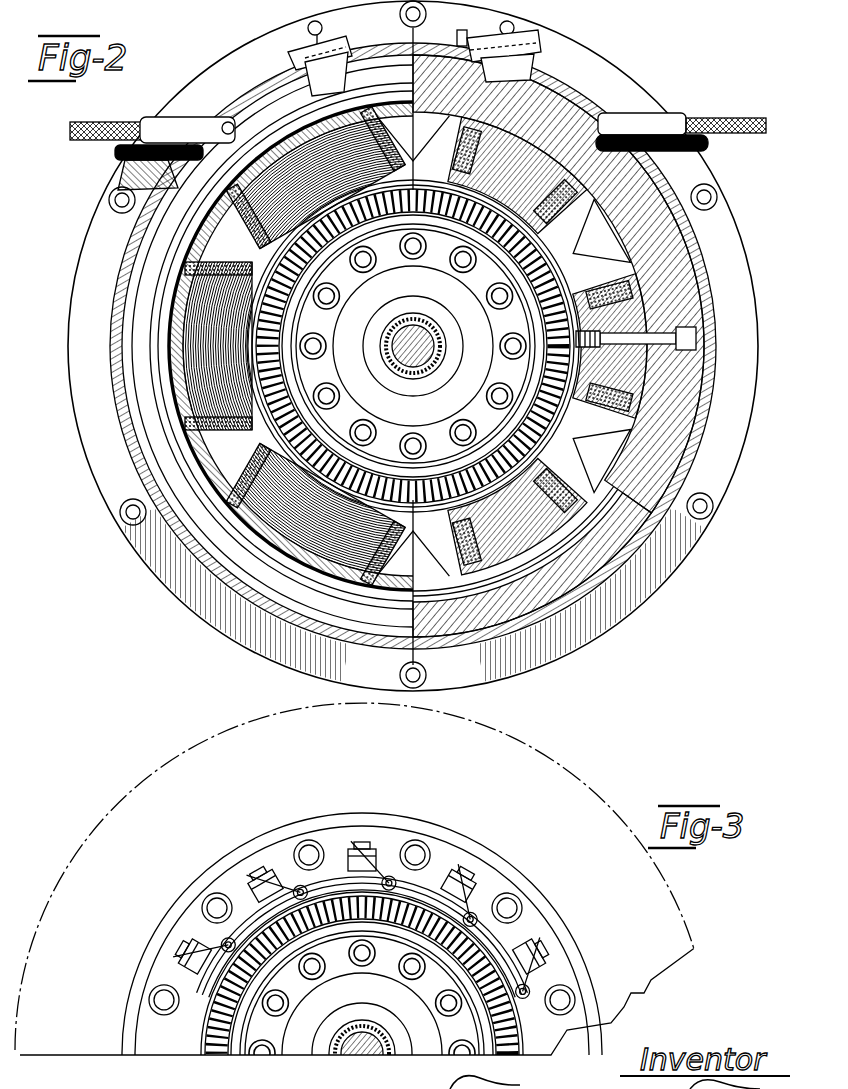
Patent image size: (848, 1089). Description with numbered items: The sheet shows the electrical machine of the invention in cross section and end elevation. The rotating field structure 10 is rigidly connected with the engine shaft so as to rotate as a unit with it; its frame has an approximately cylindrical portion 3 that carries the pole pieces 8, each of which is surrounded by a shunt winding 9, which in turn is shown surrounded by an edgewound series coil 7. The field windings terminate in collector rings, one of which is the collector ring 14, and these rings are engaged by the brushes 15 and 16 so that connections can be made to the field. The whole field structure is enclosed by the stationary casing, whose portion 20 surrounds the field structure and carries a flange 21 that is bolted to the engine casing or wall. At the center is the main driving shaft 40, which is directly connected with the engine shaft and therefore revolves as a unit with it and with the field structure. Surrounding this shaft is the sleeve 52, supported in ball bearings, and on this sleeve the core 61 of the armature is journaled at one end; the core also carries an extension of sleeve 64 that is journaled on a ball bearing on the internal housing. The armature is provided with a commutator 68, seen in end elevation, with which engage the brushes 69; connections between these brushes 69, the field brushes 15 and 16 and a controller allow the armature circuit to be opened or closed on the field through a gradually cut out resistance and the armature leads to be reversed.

In FIG. 2, the cylindrical portion of field frame 3 is at (182, 346).
In FIG. 2, the edgewound series coils 7 is at (246, 260).
In FIG. 2, the pole pieces 8 is at (586, 440).
In FIG. 2, the shunt windings 9 is at (582, 222).
In FIG. 2, the rotating field structure 10 is at (452, 68).
In FIG. 2, the collector ring 14 is at (308, 86).
In FIG. 2, the brush 15 is at (534, 63).
In FIG. 2, the brush 16 is at (320, 58).
In FIG. 2, the casing portion 20 is at (122, 310).
In FIG. 2, the flange 21 is at (84, 380).
In FIG. 2, the main driving shaft 40 is at (398, 326).
In FIG. 3, the main driving shaft 40 is at (356, 1055).
In FIG. 2, the sleeve 52 is at (421, 322).
In FIG. 3, the sleeve 52 is at (343, 1048).
In FIG. 2, the core 61 is at (458, 338).
In FIG. 3, the core 61 is at (297, 1045).
In FIG. 2, the sleeve extension 64 is at (438, 331).
In FIG. 3, the sleeve extension 64 is at (330, 1050).
In FIG. 2, the commutator 68 is at (545, 318).
In FIG. 3, the commutator 68 is at (224, 1055).
In FIG. 3, the brushes 69 is at (282, 880).